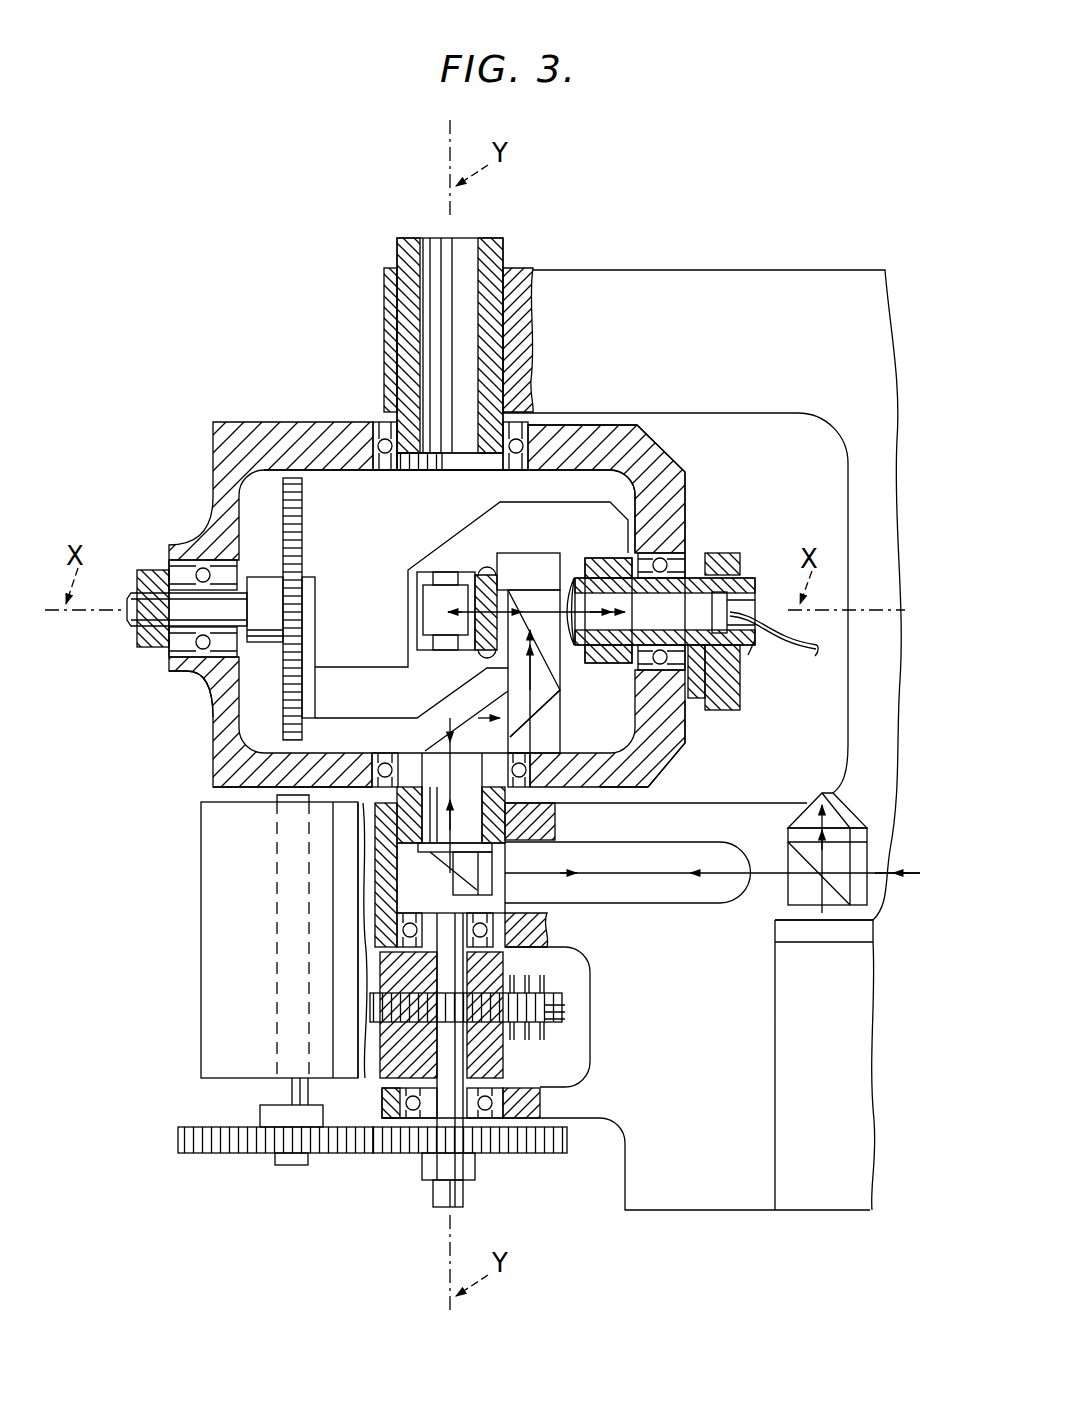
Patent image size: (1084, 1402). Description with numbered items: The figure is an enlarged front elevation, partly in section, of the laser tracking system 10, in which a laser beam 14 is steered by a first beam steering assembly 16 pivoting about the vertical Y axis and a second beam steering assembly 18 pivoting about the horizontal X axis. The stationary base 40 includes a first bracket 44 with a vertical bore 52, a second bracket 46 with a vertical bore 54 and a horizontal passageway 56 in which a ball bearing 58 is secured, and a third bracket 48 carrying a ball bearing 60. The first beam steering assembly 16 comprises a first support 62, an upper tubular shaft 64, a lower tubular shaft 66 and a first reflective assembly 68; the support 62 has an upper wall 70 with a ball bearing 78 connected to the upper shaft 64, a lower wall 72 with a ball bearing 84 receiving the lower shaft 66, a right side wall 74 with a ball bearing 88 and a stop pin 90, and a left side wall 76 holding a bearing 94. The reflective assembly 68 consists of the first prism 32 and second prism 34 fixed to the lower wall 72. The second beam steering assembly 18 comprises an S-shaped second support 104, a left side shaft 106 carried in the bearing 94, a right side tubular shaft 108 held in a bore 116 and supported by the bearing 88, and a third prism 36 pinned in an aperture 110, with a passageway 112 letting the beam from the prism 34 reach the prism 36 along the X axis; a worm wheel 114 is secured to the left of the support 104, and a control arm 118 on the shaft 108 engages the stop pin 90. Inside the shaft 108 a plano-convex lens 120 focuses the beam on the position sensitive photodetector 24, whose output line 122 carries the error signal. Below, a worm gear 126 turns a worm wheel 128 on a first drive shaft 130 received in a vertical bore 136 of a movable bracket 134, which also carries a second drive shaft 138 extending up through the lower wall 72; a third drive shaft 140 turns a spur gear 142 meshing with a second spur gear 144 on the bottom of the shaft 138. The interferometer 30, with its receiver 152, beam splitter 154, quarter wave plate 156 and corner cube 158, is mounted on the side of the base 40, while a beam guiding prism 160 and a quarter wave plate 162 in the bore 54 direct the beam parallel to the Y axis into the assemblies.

The system 10 is at (684, 240).
The laser beam 14 is at (900, 878).
The first beam steering assembly 16 is at (694, 776).
The second beam steering assembly 18 is at (393, 517).
The position sensitive photodetector 24 is at (752, 600).
The interferometer 30 is at (773, 963).
The first 45° rear surface prism 32 is at (424, 741).
The second rear surface prism 34 is at (561, 677).
The third front surface prism 36 is at (416, 610).
The stationary base 40 is at (842, 272).
The first bracket 44 is at (383, 300).
The second bracket 46 is at (375, 893).
The third bracket 48 is at (381, 1110).
The vertical bore 52 is at (503, 285).
The vertical bore 54 is at (540, 915).
The horizontal passageway 56 is at (641, 897).
The ball bearing 58 is at (572, 940).
The ball bearing 60 is at (520, 1100).
The first support 62 is at (672, 458).
The upper tubular shaft 64 is at (506, 237).
The lower tubular shaft 66 is at (532, 823).
The first reflective assembly 68 is at (566, 712).
The upper wall 70 is at (248, 421).
The lower wall 72 is at (236, 789).
The right side wall 74 is at (687, 742).
The left side wall 76 is at (212, 717).
The ball bearing 78 is at (373, 435).
The ball bearing 84 is at (374, 766).
The ball bearing 88 is at (670, 552).
The stop pin 90 is at (697, 700).
The bearing 94 is at (192, 561).
The second S-shaped support 104 is at (462, 528).
The left side shaft 106 is at (125, 616).
The right side tubular shaft 108 is at (750, 652).
The aperture 110 is at (460, 570).
The passageway 112 is at (498, 592).
The worm wheel 114 is at (303, 515).
The bore 116 is at (607, 560).
The control arm 118 is at (741, 702).
The plano-convex lens 120 is at (573, 578).
The output line 122 is at (807, 657).
The worm gear 126 is at (515, 993).
The worm wheel 128 is at (565, 1010).
The first drive shaft 130 is at (462, 1045).
The movable bracket 134 is at (200, 1012).
The vertical bore 136 is at (372, 992).
The second drive shaft 138 is at (275, 913).
The third drive shaft 140 is at (432, 1196).
The spur gear 142 is at (547, 1154).
The second spur gear 144 is at (182, 1154).
The receiver 152 is at (775, 1052).
The beam splitter 154 is at (868, 855).
The quarter wave plate 156 is at (868, 836).
The corner cube 158 is at (838, 804).
The beam guiding 45° rear surface prism 160 is at (440, 856).
The quarter wave plate 162 is at (505, 850).